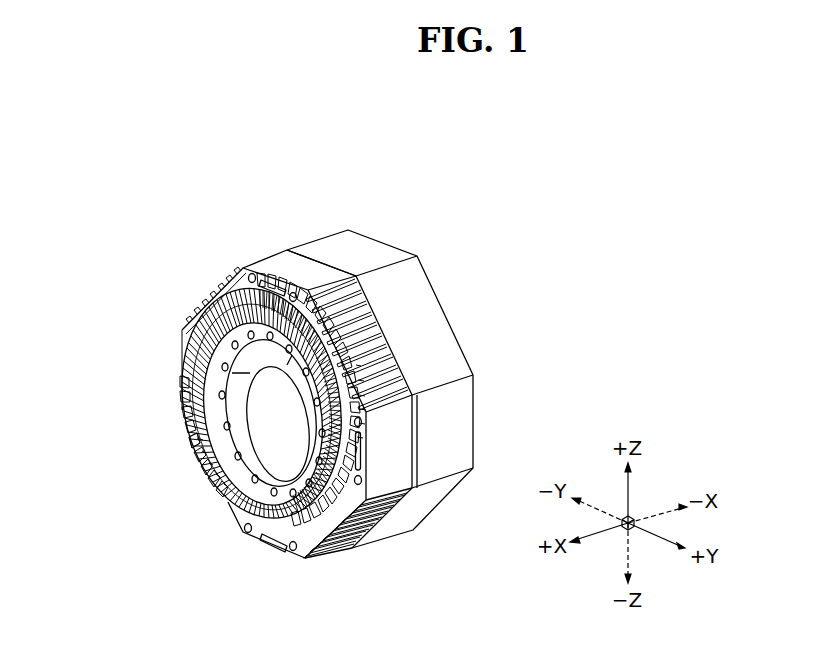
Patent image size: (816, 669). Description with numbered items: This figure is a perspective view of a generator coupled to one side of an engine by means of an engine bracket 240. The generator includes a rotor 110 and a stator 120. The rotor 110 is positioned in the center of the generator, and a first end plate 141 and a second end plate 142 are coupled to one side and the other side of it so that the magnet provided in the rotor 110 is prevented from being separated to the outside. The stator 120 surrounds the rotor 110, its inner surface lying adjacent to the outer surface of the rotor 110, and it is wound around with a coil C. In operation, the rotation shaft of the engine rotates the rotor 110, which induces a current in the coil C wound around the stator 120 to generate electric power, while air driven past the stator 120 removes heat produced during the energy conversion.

The rotor 110 is at (188, 345).
The stator 120 is at (240, 289).
The first end plate 141 is at (190, 425).
The second end plate 142 is at (232, 500).
The engine bracket 240 is at (348, 252).
The coil C is at (200, 467).